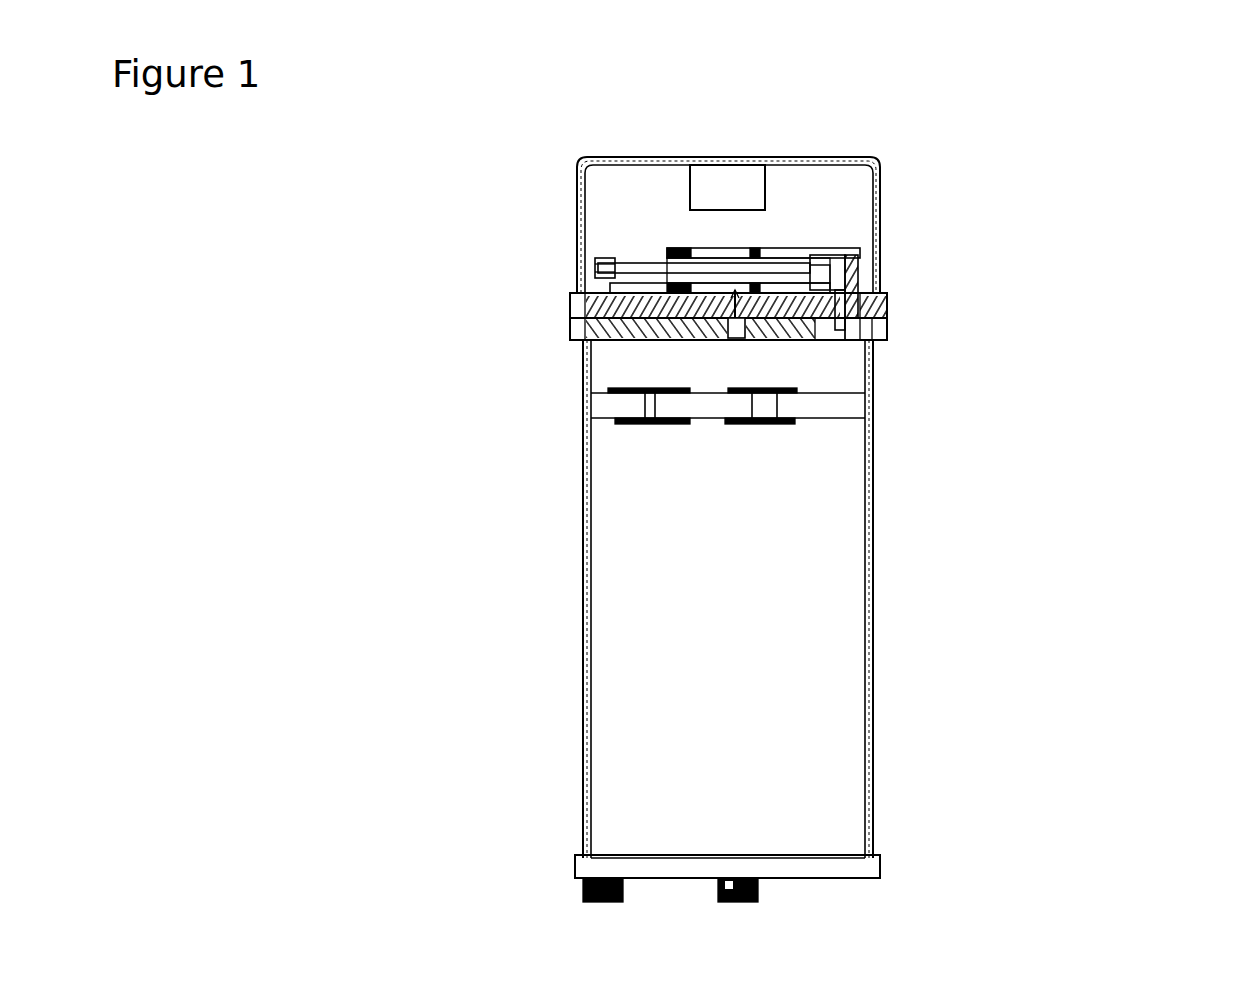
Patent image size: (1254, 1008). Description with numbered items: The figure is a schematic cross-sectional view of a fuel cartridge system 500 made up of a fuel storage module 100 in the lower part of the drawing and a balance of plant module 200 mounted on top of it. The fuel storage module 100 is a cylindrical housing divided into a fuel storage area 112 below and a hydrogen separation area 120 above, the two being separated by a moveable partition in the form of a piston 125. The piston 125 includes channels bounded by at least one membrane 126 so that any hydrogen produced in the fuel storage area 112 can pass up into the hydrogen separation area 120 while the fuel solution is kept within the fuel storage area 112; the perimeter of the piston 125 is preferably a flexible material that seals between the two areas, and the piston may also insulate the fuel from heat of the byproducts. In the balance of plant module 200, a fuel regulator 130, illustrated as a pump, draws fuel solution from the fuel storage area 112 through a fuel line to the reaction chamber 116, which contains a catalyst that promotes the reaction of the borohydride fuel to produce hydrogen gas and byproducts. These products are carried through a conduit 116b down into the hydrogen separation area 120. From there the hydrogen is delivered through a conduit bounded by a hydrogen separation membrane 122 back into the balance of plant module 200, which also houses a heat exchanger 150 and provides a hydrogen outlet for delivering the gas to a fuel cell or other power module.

The fuel cartridge system 500 is at (820, 56).
The balance of plant module 200 is at (902, 152).
The fuel storage module 100 is at (557, 330).
The heat exchanger 150 is at (720, 185).
The fuel regulator 130 is at (670, 248).
The reaction chamber 116 is at (650, 270).
The conduit 116b is at (843, 328).
The hydrogen separation membrane 122 is at (735, 342).
The hydrogen separation area 120 is at (830, 367).
The piston 125 is at (845, 405).
The membrane 126 is at (782, 428).
The fuel storage area 112 is at (782, 643).